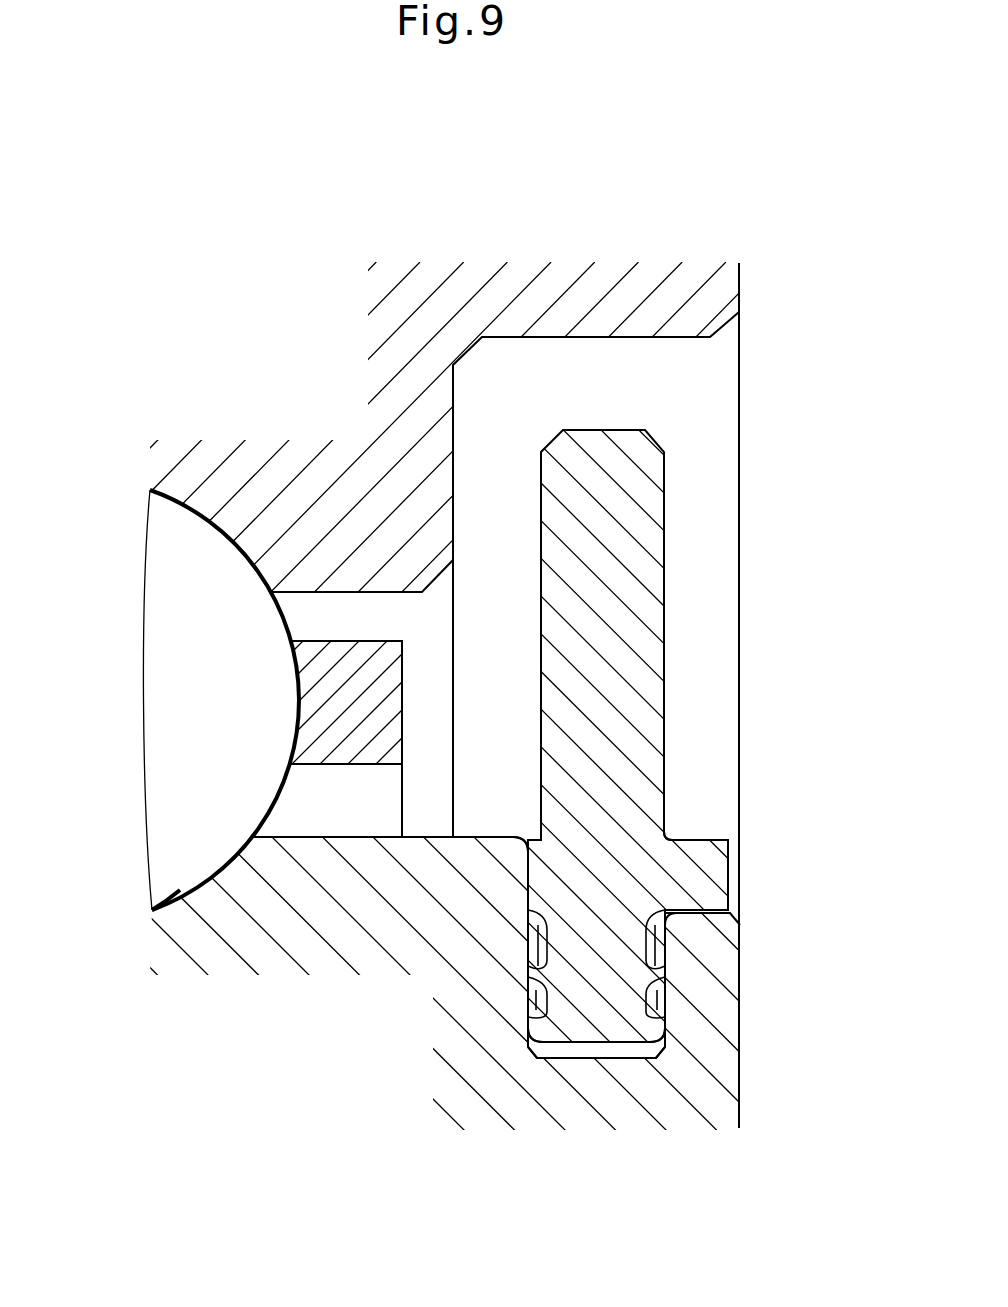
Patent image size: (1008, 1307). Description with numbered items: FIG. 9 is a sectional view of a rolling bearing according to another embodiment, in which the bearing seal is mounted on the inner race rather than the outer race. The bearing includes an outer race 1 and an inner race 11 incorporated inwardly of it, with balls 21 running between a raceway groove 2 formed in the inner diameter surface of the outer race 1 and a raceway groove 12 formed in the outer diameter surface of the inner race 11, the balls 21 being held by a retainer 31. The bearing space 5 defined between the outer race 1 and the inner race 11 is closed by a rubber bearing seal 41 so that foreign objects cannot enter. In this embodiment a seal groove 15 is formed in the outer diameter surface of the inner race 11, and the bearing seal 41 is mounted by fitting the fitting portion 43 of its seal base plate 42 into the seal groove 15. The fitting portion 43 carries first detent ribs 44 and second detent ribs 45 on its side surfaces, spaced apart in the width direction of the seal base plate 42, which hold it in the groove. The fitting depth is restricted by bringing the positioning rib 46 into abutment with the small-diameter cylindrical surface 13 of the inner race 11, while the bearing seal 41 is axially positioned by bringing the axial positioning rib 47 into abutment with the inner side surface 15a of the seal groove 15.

The outer race 1 is at (247, 457).
The raceway groove 2 is at (188, 512).
The bearing space 5 is at (503, 666).
The inner race 11 is at (277, 955).
The raceway groove 12 is at (190, 877).
The small diameter cylindrical surface 13 is at (707, 910).
The seal groove 15 is at (602, 1058).
The inner side surface 15a is at (533, 945).
The ball 21 is at (168, 762).
The retainer 31 is at (317, 703).
The bearing seal 41 is at (666, 565).
The seal base plate 42 is at (658, 657).
The fitting portion 43 is at (582, 1010).
The first detent rib 44 is at (530, 980).
The second detent rib 45 is at (535, 1003).
The positioning rib 46 is at (714, 866).
The axial positioning rib 47 is at (520, 866).